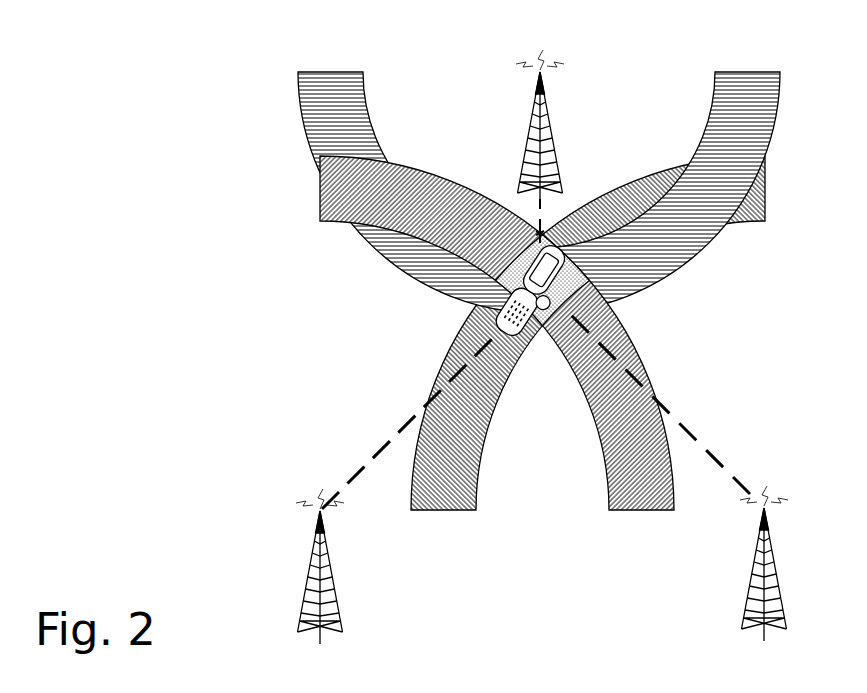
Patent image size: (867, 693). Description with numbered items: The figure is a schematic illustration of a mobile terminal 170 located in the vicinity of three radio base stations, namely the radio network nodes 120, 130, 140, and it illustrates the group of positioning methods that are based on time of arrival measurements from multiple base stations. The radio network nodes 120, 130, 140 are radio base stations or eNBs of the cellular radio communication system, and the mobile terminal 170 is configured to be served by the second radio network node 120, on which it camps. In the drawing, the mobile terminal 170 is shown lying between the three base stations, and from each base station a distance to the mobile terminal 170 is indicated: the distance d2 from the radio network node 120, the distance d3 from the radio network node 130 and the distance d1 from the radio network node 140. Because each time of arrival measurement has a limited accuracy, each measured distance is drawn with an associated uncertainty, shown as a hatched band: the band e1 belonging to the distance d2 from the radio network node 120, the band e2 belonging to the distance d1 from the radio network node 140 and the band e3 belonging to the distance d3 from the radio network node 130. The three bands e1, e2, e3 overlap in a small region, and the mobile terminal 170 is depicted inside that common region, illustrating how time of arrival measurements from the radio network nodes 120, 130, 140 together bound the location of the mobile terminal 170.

The second radio network node 120 is at (562, 127).
The radio network node 130 is at (345, 569).
The radio network node 140 is at (741, 567).
The mobile terminal 170 is at (504, 305).
The range error band of base station 120 e1 is at (539, 176).
The range error band of base station 140 e2 is at (606, 333).
The range error band of base station 130 e3 is at (497, 350).
The distance to base station 140 d1 is at (658, 402).
The distance to base station 120 d2 is at (527, 217).
The distance to base station 130 d3 is at (413, 417).